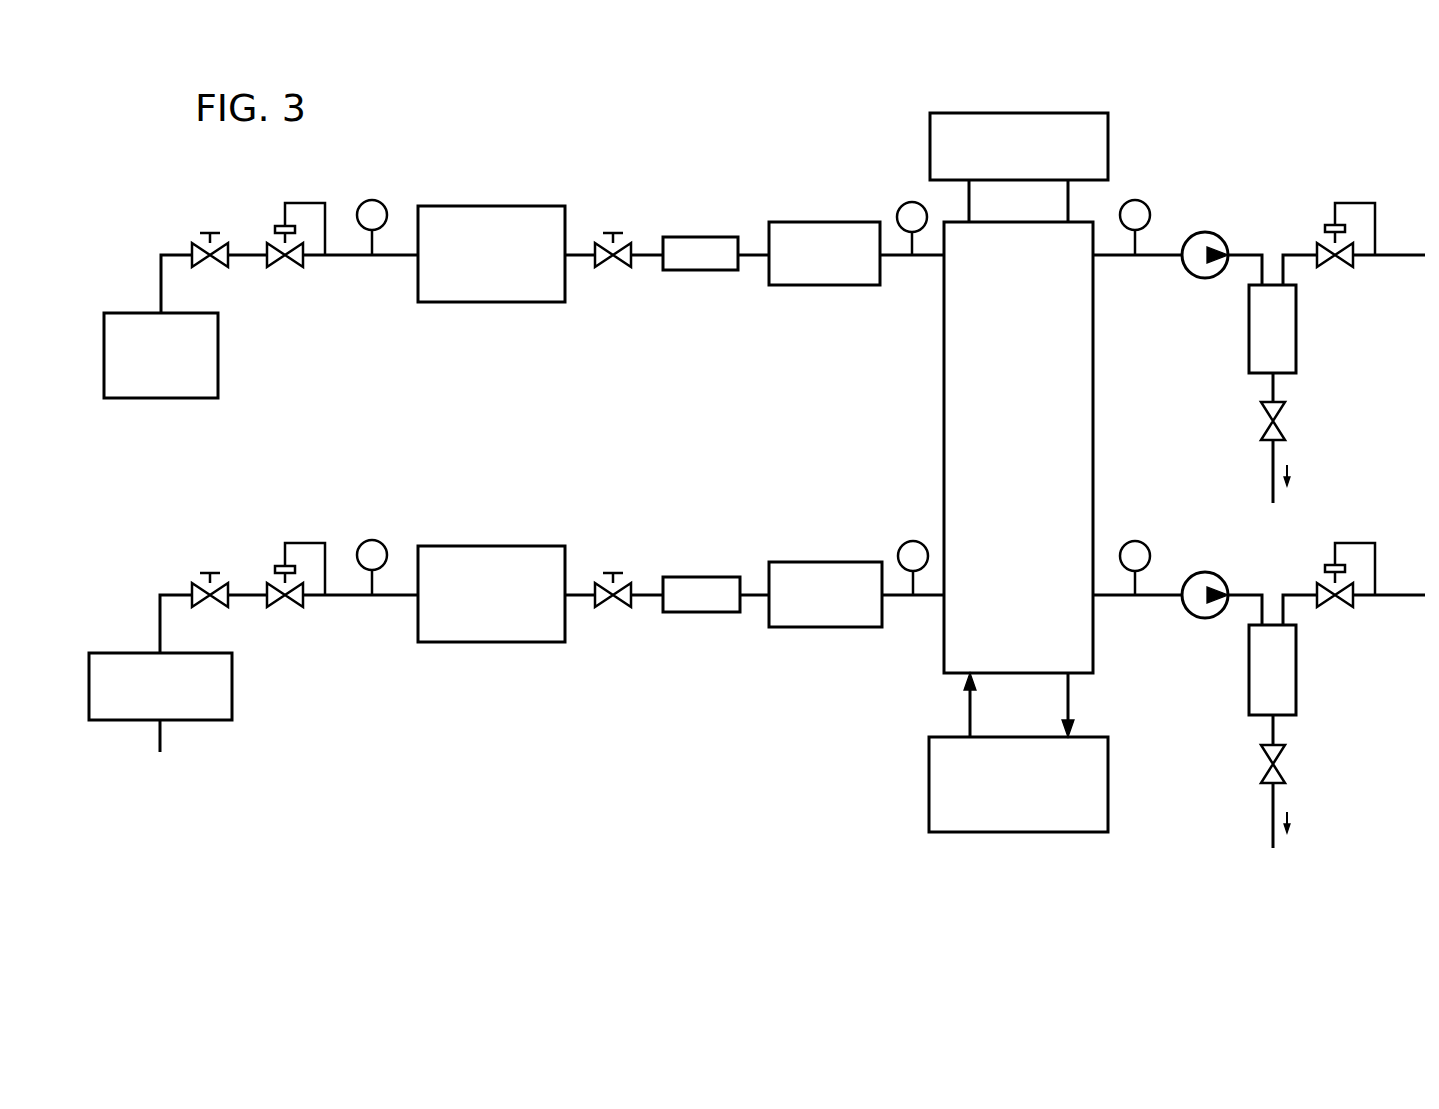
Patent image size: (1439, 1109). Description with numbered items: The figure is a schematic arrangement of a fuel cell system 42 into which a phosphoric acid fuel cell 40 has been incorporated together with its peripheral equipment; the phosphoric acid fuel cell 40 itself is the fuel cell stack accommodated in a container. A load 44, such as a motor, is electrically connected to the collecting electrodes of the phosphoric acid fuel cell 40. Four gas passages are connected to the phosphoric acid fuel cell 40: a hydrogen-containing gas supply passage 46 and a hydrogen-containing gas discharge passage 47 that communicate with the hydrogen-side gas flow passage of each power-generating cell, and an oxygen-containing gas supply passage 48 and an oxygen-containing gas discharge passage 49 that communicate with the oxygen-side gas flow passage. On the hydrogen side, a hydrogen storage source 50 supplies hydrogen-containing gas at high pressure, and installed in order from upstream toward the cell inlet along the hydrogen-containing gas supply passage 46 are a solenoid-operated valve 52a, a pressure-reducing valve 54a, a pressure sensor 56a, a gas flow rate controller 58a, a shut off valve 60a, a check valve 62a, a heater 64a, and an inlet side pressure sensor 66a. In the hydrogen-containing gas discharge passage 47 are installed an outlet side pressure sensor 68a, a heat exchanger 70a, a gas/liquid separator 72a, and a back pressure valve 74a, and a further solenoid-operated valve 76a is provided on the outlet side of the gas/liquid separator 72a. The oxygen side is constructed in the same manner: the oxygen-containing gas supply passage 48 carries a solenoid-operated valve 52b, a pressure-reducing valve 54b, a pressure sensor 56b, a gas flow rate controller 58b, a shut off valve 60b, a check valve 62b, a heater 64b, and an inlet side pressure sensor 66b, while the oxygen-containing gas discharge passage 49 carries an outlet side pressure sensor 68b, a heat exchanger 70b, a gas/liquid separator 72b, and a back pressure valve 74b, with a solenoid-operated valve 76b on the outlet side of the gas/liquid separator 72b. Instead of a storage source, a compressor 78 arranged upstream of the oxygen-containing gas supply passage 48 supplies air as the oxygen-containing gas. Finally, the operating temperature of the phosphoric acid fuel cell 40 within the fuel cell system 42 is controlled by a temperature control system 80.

The phosphoric acid fuel cell 40 is at (1097, 400).
The fuel cell system 42 is at (1207, 152).
The load 44 is at (1083, 113).
The hydrogen-containing gas supply passage 46 is at (752, 252).
The hydrogen-containing gas discharge passage 47 is at (1152, 258).
The oxygen-containing gas supply passage 48 is at (746, 592).
The oxygen-containing gas discharge passage 49 is at (1165, 598).
The hydrogen storage source 50 is at (208, 312).
The solenoid-operated valve 52a is at (209, 231).
The solenoid-operated valve 52b is at (209, 571).
The pressure-reducing valve 54a is at (285, 271).
The pressure-reducing valve 54b is at (285, 611).
The pressure sensor 56a is at (373, 200).
The pressure sensor 56b is at (373, 540).
The gas flow rate controller 58a is at (540, 206).
The gas flow rate controller 58b is at (540, 546).
The shut off valve 60a is at (613, 232).
The shut off valve 60b is at (613, 572).
The check valve 62a is at (713, 236).
The check valve 62b is at (679, 576).
The heater 64a is at (855, 221).
The heater 64b is at (857, 561).
The inlet side pressure sensor 66a is at (912, 201).
The inlet side pressure sensor 66b is at (912, 541).
The outlet side pressure sensor 68a is at (1135, 200).
The outlet side pressure sensor 68b is at (1135, 541).
The heat exchanger 70a is at (1205, 232).
The heat exchanger 70b is at (1205, 572).
The gas/liquid separator 72a is at (1297, 329).
The gas/liquid separator 72b is at (1297, 669).
The back pressure valve 74a is at (1331, 271).
The back pressure valve 74b is at (1331, 611).
The solenoid-operated valve 76a is at (1287, 421).
The solenoid-operated valve 76b is at (1287, 761).
The compressor 78 is at (208, 652).
The temperature control system 80 is at (1099, 736).